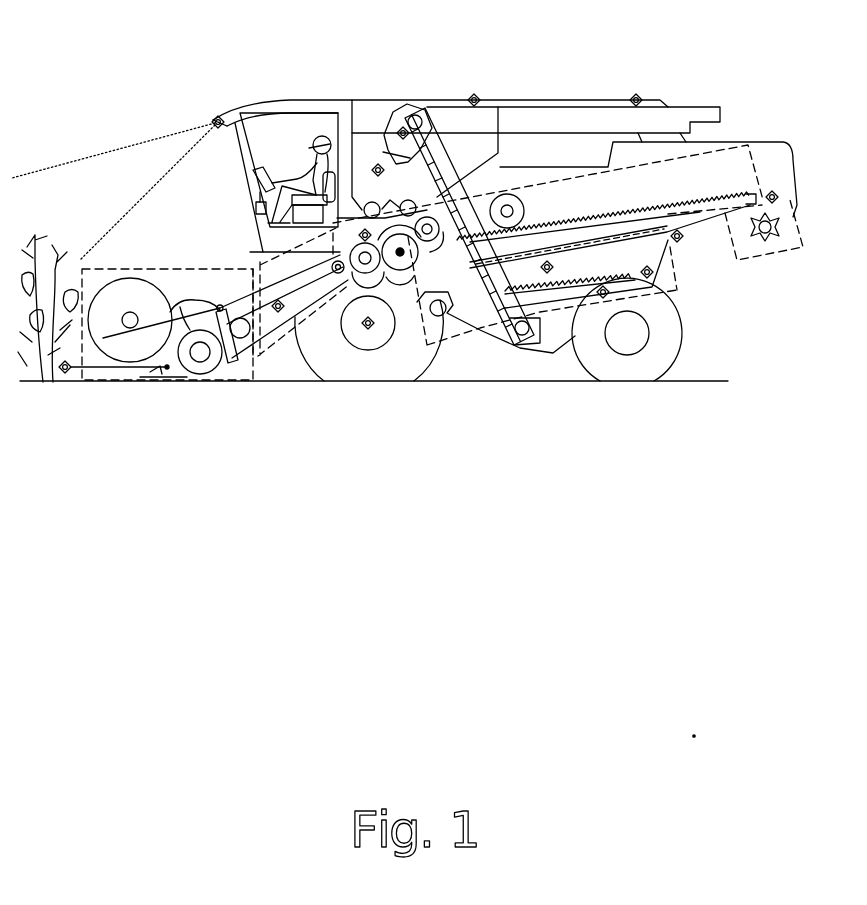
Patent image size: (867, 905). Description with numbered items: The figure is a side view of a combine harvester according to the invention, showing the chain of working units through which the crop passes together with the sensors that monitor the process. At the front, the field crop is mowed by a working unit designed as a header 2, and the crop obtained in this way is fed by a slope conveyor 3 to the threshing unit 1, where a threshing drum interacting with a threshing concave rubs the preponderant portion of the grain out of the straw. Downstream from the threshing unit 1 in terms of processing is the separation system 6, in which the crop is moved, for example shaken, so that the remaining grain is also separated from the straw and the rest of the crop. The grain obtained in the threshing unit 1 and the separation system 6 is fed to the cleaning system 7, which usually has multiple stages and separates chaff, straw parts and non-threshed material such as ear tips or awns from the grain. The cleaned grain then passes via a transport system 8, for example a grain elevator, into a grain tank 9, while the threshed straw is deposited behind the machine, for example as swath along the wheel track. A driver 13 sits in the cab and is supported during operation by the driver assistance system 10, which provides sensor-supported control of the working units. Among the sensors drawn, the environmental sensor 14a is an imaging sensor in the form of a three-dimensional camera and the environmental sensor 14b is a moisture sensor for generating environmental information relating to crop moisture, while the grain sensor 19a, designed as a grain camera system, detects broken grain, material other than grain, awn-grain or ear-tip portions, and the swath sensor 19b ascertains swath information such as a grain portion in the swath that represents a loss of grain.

The threshing unit 1 is at (392, 280).
The header 2 is at (162, 268).
The slope conveyor 3 is at (277, 333).
The separation system 6 is at (642, 158).
The cleaning system 7 is at (677, 270).
The transport system 8 is at (457, 185).
The grain tank 9 is at (384, 127).
The driver assistance system 10 is at (256, 205).
The driver 13 is at (320, 136).
The environmental sensor 14a is at (212, 117).
The environmental sensor 14b is at (65, 374).
The grain sensor 19a is at (377, 165).
The swath sensor 19b is at (773, 192).